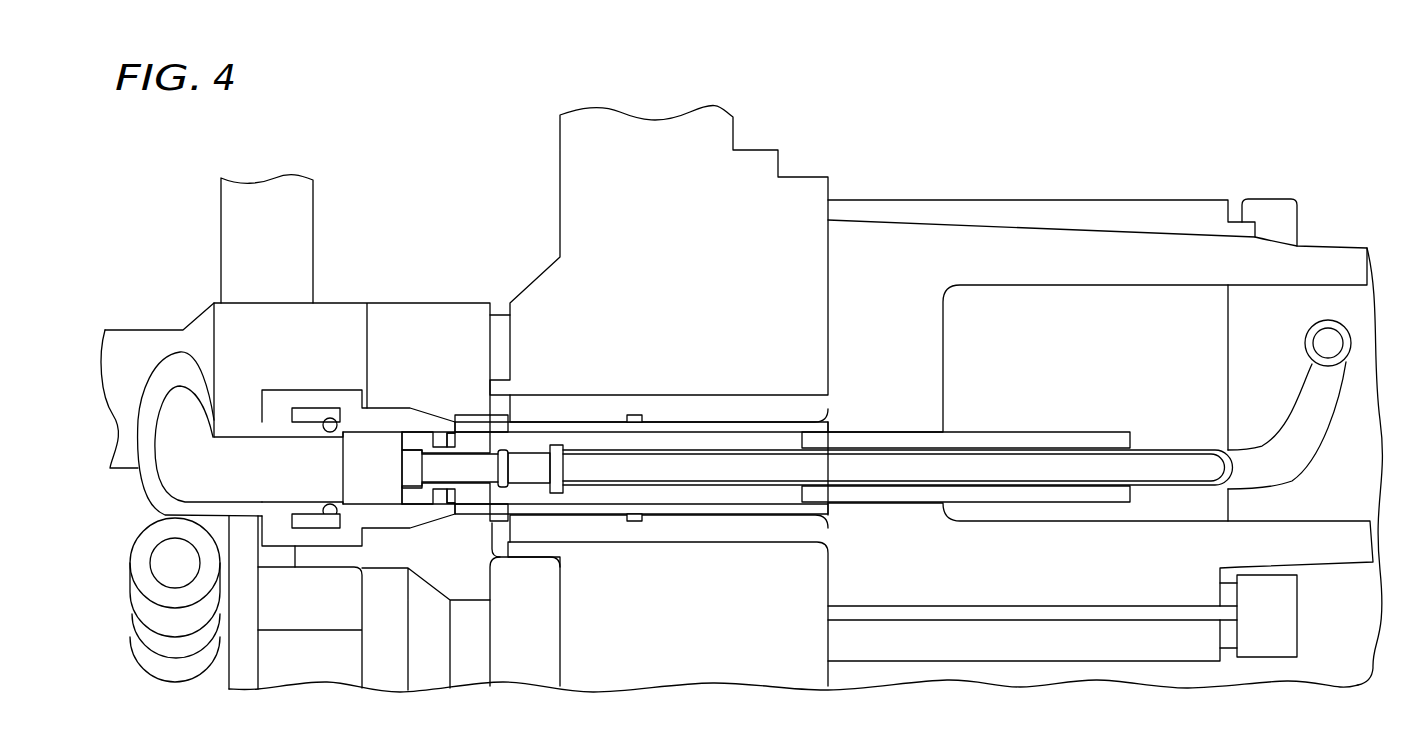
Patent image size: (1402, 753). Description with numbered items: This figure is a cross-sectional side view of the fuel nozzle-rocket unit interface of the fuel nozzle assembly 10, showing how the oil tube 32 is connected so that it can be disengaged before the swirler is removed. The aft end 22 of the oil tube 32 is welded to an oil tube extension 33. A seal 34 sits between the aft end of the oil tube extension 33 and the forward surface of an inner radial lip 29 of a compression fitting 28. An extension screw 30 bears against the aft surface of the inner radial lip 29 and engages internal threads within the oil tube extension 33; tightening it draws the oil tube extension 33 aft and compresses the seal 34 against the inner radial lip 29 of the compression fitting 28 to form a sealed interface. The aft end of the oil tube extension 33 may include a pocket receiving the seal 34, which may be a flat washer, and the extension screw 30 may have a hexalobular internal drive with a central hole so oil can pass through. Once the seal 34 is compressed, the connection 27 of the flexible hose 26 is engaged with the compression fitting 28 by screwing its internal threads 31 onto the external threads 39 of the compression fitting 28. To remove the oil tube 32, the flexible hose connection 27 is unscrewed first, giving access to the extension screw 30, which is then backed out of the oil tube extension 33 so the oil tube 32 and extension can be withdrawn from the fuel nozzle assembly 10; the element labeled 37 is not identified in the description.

The fuel nozzle assembly 10 is at (1123, 70).
The aft end of the oil tube 22 is at (583, 470).
The flexible hose 26 is at (172, 447).
The flexible hose connection 27 is at (298, 400).
The compression fitting 28 is at (380, 412).
The inner radial lip 29 is at (437, 442).
The extension screw 30 is at (462, 468).
The internal threads 31 is at (300, 410).
The oil tube 32 is at (1053, 467).
The oil tube extension 33 is at (527, 470).
The seal 34 is at (457, 445).
The lower flange nut 37 is at (303, 418).
The external threads 39 is at (382, 532).